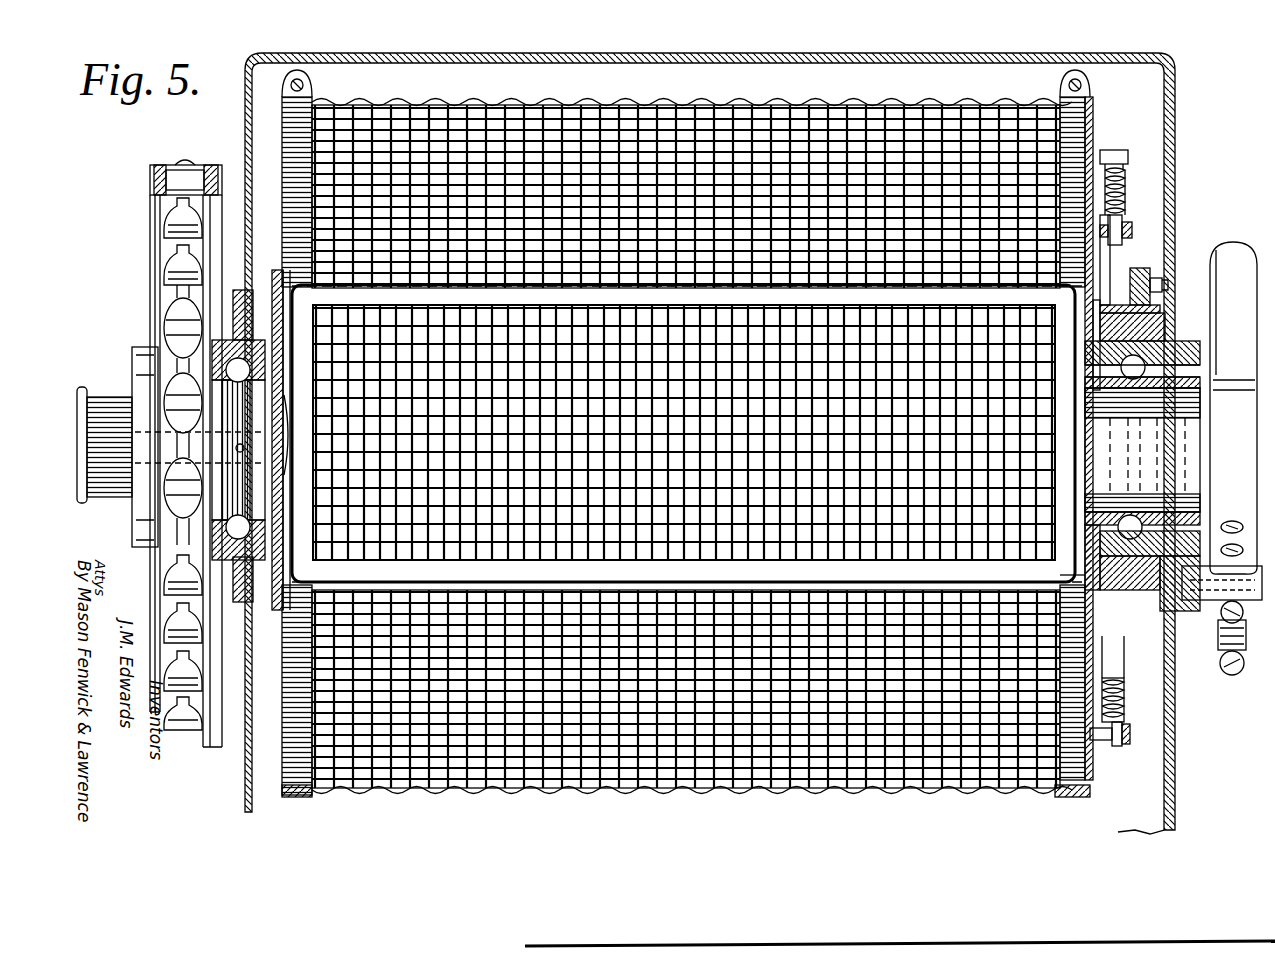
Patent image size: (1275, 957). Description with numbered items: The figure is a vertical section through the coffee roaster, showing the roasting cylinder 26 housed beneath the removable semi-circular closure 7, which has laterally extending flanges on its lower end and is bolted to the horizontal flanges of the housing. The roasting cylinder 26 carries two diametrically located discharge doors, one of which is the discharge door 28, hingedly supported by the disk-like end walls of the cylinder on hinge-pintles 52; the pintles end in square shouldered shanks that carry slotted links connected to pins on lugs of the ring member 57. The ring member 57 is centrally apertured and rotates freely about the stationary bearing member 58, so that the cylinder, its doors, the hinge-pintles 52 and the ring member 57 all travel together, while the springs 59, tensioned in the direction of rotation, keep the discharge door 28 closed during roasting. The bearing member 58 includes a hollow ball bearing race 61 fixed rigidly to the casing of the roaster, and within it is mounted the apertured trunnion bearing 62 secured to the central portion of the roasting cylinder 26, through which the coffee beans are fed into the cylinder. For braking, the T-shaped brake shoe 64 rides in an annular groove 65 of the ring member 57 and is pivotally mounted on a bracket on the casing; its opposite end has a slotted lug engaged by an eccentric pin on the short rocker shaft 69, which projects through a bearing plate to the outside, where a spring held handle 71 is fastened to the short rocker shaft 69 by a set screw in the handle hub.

The removable semi-circular closure 7 is at (246, 114).
The roasting cylinder 26 is at (640, 102).
The hinge-pintle 52 is at (272, 296).
The spring 59 is at (1125, 215).
The brake shoe 64 is at (1150, 302).
The annular groove 65 is at (1155, 328).
The ring member 57 is at (1160, 330).
The bearing member 58 is at (1202, 353).
The apertured trunnion bearing 62 is at (1200, 385).
The hollow ball bearing race 61 is at (1148, 385).
The short rocker shaft 69 is at (1252, 530).
The spring held handle 71 is at (1240, 240).
The discharge door 28 is at (1100, 592).